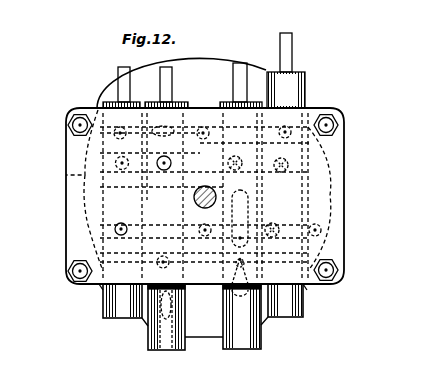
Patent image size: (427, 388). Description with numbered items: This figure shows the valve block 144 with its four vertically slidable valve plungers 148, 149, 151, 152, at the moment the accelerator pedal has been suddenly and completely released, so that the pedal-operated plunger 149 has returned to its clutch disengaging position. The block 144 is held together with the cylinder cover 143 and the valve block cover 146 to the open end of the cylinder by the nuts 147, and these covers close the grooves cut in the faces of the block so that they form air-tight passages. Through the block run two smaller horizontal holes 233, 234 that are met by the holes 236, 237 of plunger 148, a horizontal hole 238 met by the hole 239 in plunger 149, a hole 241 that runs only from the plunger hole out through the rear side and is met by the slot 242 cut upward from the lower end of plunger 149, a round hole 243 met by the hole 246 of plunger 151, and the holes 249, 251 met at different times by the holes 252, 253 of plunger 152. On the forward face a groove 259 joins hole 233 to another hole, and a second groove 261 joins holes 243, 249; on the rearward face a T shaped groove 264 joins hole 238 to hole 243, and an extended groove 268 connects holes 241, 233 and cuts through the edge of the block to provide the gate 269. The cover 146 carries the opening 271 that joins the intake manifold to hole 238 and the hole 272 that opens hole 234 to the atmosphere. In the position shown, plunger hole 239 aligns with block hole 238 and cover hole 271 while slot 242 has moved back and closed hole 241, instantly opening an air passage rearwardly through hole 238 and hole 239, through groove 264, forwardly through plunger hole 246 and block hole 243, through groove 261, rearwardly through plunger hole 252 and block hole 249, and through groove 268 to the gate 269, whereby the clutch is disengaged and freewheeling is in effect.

The cylinder cover 143 is at (216, 60).
The valve block 144 is at (66, 149).
The valve block cover 146 is at (72, 247).
The nuts 147 is at (70, 277).
The valve plunger 148 is at (118, 318).
The valve plunger 149 is at (150, 348).
The valve plunger 151 is at (245, 349).
The valve plunger 152 is at (303, 320).
The horizontal hole 233 is at (123, 103).
The horizontal hole 234 is at (114, 228).
The plunger hole 236 is at (125, 174).
The plunger hole 237 is at (114, 226).
The horizontal hole 238 is at (168, 198).
The plunger hole 239 is at (154, 153).
The horizontal hole 241 is at (163, 270).
The slot 242 is at (168, 350).
The round hole 243 is at (222, 140).
The plunger hole 246 is at (245, 157).
The horizontal hole 249 is at (290, 172).
The horizontal hole 251 is at (283, 220).
The plunger hole 252 is at (278, 142).
The plunger hole 253 is at (298, 239).
The groove 259 is at (166, 101).
The second groove 261 is at (243, 208).
The T shaped groove 264 is at (203, 189).
The extended groove 268 is at (323, 163).
The gate 269 is at (66, 184).
The cover hole 271 is at (157, 198).
The cover hole 272 is at (115, 234).